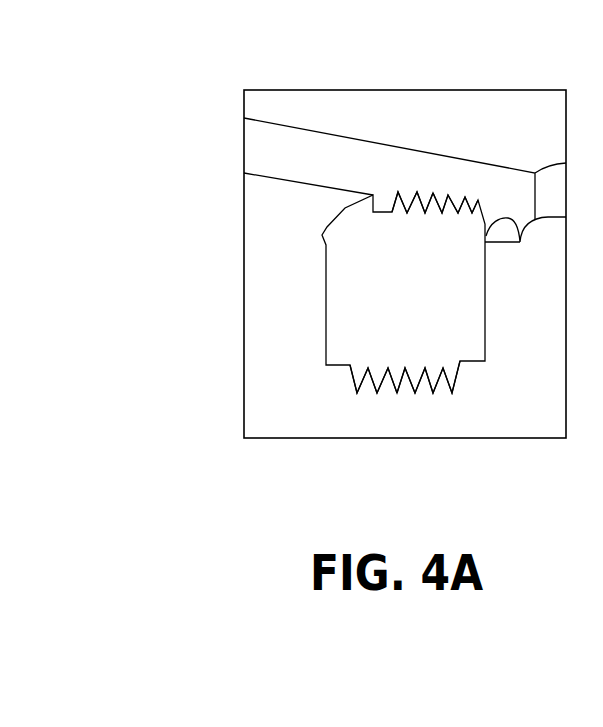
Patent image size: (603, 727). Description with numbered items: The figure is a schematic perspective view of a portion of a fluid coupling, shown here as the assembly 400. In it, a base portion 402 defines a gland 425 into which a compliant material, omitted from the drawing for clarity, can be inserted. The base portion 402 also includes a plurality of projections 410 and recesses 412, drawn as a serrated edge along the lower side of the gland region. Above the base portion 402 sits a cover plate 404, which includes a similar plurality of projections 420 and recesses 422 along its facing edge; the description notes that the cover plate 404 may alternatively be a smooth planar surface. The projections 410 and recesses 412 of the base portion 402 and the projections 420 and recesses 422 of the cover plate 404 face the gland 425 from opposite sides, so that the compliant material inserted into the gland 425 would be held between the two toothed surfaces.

The joint assembly 400 is at (123, 55).
The base portion 402 is at (242, 372).
The cover plate 404 is at (242, 135).
The projections 410 is at (380, 360).
The recesses 412 is at (446, 358).
The projections 420 is at (393, 224).
The recesses 422 is at (463, 229).
The gland 425 is at (343, 261).